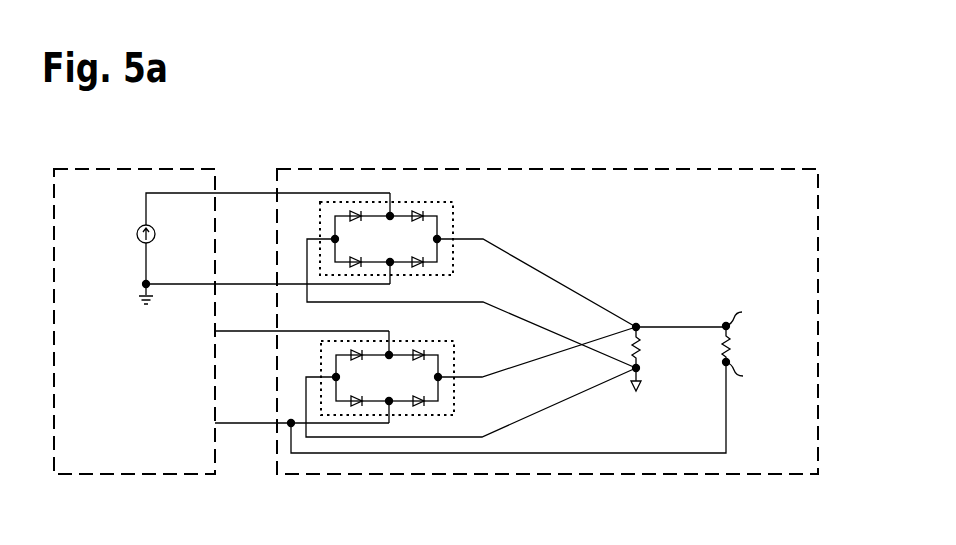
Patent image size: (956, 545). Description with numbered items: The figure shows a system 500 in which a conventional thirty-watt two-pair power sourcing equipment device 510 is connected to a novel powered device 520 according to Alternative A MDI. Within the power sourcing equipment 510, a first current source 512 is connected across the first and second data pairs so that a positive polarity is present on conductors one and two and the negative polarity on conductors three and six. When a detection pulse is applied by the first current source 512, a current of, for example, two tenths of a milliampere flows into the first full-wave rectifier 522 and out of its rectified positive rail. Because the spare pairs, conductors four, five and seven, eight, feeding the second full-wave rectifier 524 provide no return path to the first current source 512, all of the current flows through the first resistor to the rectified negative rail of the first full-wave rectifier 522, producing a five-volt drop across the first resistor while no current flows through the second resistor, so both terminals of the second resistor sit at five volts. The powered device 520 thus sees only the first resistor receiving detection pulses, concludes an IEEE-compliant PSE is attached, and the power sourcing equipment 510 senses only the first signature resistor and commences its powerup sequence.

The system 500 is at (636, 157).
The power sourcing equipment 510 is at (209, 168).
The first current source 512 is at (137, 232).
The powered device 520 is at (431, 169).
The first full-wave rectifier 522 is at (455, 204).
The second full-wave rectifier 524 is at (457, 343).